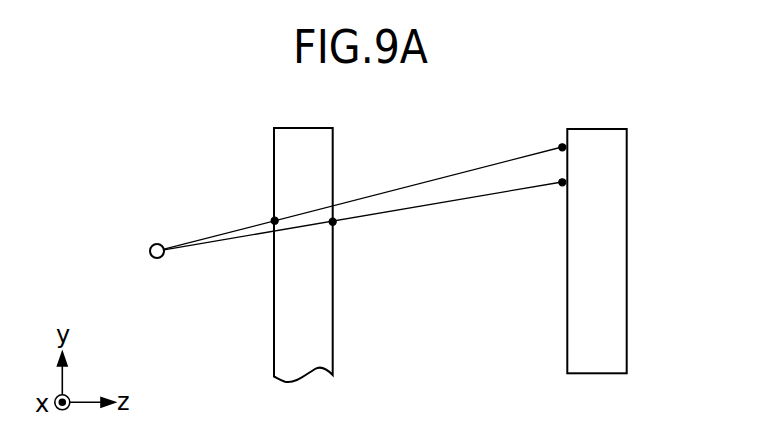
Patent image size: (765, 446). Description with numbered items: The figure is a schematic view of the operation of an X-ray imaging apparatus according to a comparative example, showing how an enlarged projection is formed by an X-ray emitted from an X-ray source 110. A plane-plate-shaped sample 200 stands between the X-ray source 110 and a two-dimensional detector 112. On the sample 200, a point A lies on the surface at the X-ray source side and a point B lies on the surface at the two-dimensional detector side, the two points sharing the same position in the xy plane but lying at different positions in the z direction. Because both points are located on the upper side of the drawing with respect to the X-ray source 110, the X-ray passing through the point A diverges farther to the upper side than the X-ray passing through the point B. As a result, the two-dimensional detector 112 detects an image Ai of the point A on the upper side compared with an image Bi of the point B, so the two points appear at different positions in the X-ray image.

The X-ray source 110 is at (157, 243).
The sample 200 is at (321, 313).
The two-dimensional detector 112 is at (615, 303).
The point A is at (271, 218).
The point B is at (336, 224).
The image Ai of the point A Ai is at (560, 145).
The image Bi of the point B Bi is at (560, 185).